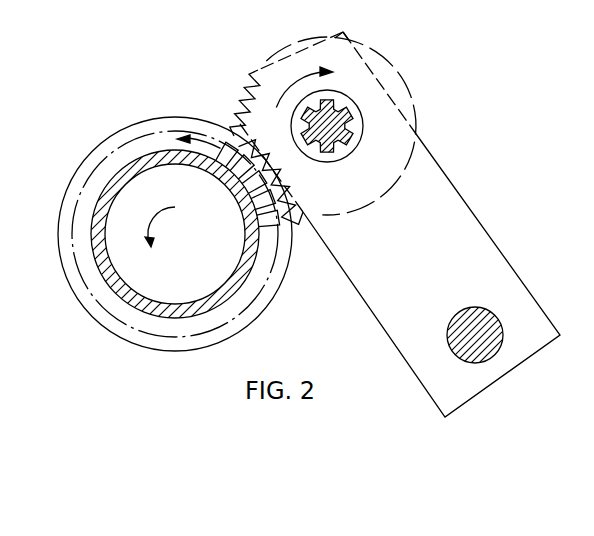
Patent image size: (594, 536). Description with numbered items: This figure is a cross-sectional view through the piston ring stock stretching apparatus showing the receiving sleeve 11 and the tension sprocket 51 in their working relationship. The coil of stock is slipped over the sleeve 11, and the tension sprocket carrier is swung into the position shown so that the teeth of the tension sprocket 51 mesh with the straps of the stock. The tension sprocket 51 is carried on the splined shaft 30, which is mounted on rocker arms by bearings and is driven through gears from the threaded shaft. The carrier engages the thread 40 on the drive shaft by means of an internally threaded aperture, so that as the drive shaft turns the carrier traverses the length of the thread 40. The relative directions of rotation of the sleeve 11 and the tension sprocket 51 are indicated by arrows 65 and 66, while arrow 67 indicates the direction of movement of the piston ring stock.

The receiving sleeve 11 is at (171, 316).
The splined shaft 30 is at (350, 137).
The thread 40 is at (478, 306).
The tension sprocket 51 is at (258, 76).
The arrow 65 is at (172, 207).
The arrow 66 is at (295, 95).
The arrow 67 is at (208, 138).